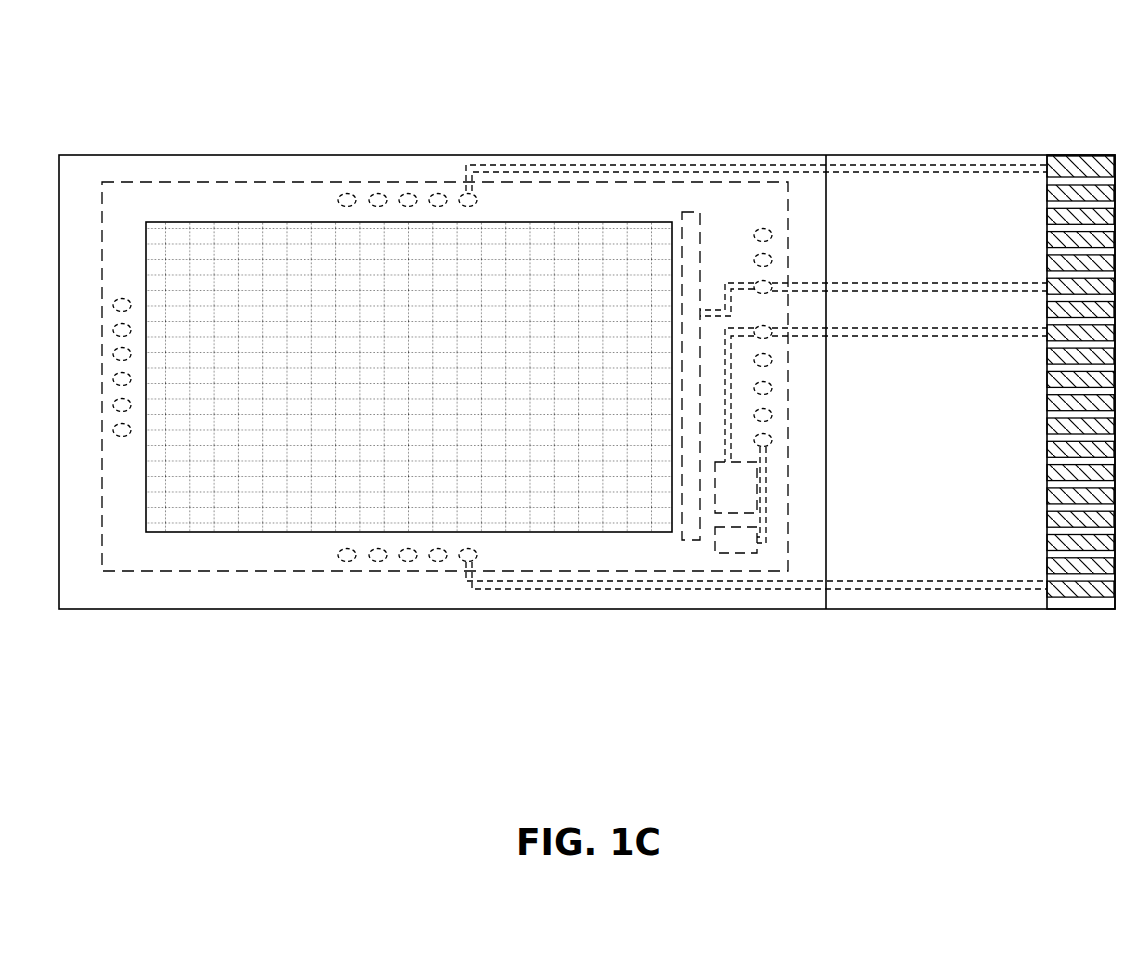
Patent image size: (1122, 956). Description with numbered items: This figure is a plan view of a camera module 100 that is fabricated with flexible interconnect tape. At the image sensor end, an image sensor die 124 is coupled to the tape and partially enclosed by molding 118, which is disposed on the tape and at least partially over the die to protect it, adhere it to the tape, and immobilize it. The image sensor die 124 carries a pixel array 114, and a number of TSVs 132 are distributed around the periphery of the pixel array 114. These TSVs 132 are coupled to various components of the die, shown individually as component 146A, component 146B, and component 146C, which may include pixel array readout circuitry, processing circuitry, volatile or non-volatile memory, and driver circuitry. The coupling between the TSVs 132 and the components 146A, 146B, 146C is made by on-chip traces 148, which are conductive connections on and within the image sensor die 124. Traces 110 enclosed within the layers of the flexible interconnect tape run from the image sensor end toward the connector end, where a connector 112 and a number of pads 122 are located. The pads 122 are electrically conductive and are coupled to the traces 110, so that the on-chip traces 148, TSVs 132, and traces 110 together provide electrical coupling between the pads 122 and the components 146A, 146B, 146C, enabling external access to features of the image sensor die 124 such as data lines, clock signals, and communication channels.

The camera module 100 is at (945, 43).
The traces 110 is at (568, 167).
The connector 112 is at (1057, 595).
The pixel array 114 is at (247, 254).
The molding 118 is at (90, 163).
The pads 122 is at (1088, 167).
The image sensor die 124 is at (188, 182).
The TSVs 132 is at (384, 195).
The component 146A is at (689, 224).
The component 146B is at (745, 487).
The component 146C is at (745, 545).
The on-chip traces 148 is at (735, 283).